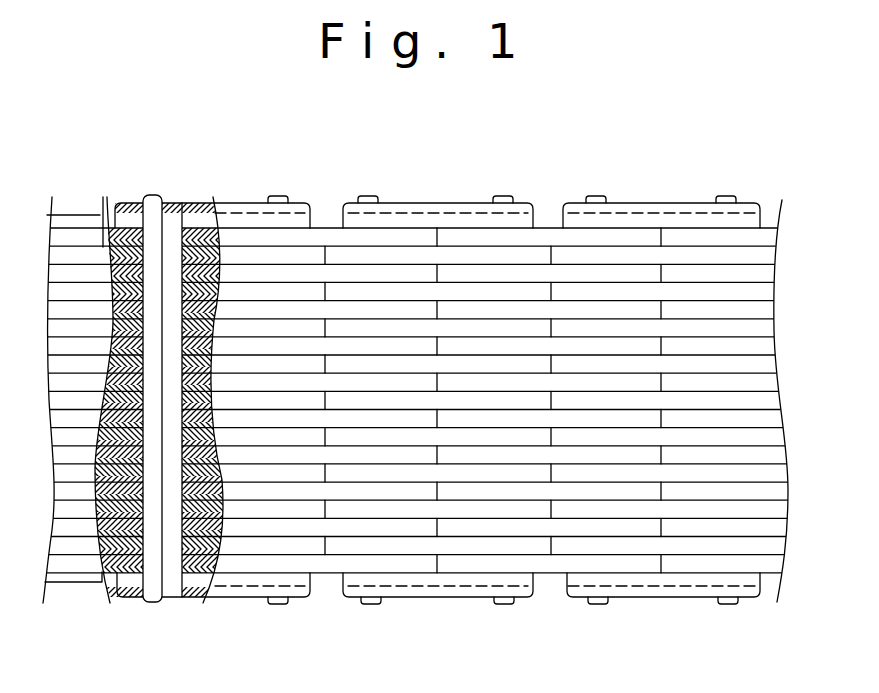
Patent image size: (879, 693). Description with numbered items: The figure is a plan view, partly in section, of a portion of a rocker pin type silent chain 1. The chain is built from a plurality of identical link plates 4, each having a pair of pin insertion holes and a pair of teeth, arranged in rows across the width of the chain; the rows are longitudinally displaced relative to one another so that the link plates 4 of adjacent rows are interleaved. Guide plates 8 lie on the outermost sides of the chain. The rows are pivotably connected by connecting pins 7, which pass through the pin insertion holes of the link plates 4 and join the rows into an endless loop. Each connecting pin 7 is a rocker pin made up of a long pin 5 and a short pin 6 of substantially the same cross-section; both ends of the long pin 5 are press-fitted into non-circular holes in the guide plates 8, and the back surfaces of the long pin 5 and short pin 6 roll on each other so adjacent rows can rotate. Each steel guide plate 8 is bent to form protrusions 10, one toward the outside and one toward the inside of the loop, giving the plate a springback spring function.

The silent chain 1 is at (566, 177).
The link plate 4 is at (291, 238).
The long pin 5 is at (148, 197).
The short pin 6 is at (172, 230).
The connecting pin 7 is at (108, 148).
The guide plate 8 is at (464, 186).
The protrusion 10 is at (400, 218).